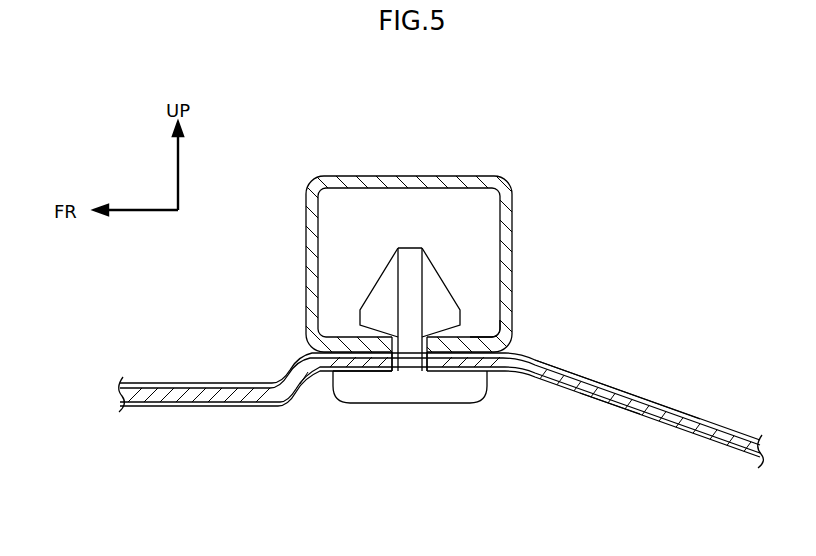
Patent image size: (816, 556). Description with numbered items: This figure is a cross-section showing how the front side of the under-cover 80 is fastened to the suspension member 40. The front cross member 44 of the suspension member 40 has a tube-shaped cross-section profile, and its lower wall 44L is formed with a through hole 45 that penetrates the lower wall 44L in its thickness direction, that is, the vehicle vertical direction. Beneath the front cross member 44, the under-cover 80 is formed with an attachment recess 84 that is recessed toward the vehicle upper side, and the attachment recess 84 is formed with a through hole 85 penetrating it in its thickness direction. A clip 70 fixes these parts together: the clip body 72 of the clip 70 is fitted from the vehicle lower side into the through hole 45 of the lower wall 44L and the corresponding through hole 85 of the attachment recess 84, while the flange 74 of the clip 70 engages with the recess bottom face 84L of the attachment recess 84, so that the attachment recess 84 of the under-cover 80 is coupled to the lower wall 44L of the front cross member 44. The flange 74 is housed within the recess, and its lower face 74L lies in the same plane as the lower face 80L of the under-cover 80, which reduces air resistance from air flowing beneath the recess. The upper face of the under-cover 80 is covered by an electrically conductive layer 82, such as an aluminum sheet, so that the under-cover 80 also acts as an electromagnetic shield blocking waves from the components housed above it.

The suspension member 40 is at (404, 233).
The front cross member 44 is at (506, 181).
The lower wall 44L is at (470, 336).
The through hole 45 is at (398, 345).
The clip body 72 is at (439, 276).
The clip 70 is at (449, 404).
The flange 74 is at (348, 372).
The lower face of flange 74L is at (401, 372).
The attachment recess 84 is at (320, 378).
The recess bottom face 84L is at (342, 397).
The through hole 85 is at (419, 376).
The electrically conductive layer 82 is at (603, 388).
The under-cover 80 is at (661, 422).
The lower face of under-cover 80L is at (613, 407).